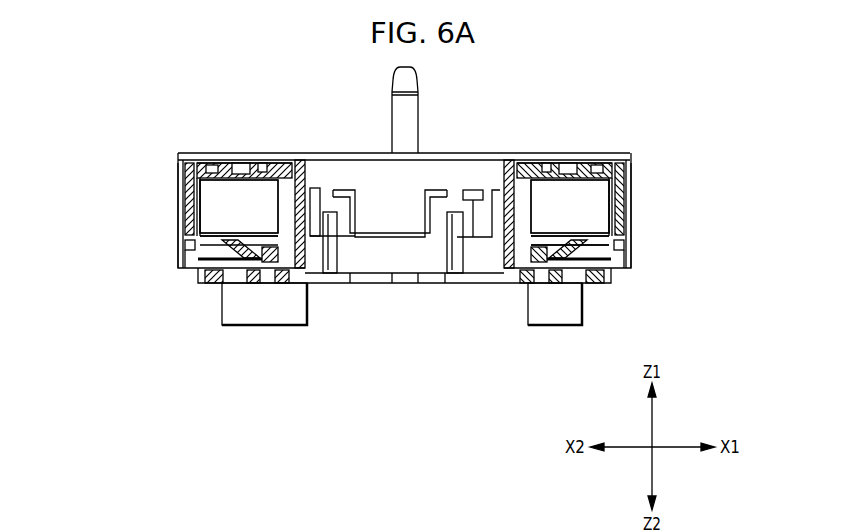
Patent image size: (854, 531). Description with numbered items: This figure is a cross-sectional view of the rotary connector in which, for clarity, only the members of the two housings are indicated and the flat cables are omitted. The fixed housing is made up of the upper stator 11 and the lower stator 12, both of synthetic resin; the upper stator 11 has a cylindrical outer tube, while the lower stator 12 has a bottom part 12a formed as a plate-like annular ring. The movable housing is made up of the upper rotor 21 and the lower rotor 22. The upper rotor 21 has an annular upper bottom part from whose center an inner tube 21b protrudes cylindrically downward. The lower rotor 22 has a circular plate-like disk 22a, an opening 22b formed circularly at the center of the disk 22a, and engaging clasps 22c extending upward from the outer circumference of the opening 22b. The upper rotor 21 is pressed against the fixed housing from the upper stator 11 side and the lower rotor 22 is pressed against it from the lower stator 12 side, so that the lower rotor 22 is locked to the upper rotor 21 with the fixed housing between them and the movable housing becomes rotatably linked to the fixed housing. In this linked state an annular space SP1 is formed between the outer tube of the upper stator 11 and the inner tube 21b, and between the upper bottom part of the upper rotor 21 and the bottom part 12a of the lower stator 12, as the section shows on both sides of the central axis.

The upper stator 11 is at (191, 215).
The lower stator 12 is at (411, 265).
The bottom part 12a is at (205, 268).
The upper rotor 21 is at (564, 143).
The inner tube 21b is at (306, 172).
The lower rotor 22 is at (402, 276).
The disk 22a is at (258, 272).
The opening 22b is at (377, 262).
The engaging clasps 22c is at (443, 203).
The annular space SP1 is at (215, 205).